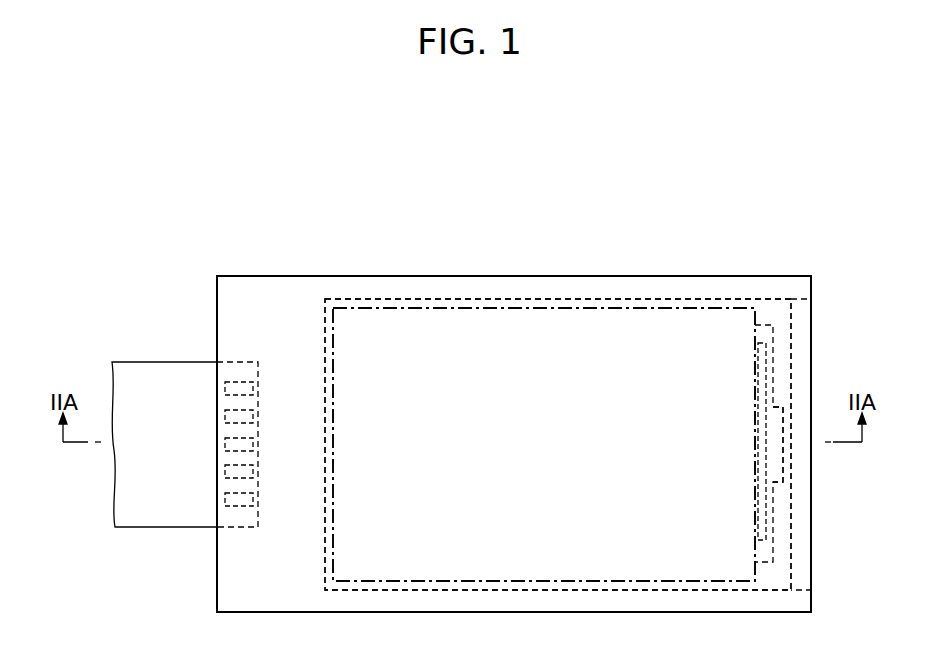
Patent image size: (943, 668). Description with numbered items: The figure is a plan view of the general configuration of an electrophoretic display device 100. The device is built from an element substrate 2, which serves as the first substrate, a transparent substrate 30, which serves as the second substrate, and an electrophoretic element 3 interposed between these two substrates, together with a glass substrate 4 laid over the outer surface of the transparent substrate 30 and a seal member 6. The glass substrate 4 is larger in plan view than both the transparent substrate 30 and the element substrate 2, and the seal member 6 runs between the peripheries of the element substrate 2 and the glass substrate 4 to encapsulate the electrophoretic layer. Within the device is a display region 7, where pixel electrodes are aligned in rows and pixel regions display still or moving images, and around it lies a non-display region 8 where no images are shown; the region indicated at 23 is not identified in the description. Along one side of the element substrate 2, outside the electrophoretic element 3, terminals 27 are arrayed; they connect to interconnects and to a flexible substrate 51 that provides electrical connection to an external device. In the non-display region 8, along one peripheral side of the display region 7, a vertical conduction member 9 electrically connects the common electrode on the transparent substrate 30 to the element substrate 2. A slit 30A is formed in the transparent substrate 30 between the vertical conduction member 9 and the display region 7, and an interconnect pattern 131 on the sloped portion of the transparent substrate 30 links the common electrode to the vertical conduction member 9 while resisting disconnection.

The electrophoretic display device 100 is at (648, 190).
The element substrate 2 is at (791, 299).
The electrophoretic element 3 is at (403, 308).
The glass substrate 4 is at (760, 286).
The seal member 6 is at (797, 323).
The display region 7 is at (544, 444).
The non-display region 8 is at (700, 290).
The vertical conduction member 9 is at (783, 463).
The pixel region 23 is at (537, 560).
The terminals 27 is at (237, 380).
The transparent substrate 30 is at (570, 300).
The slit 30A is at (762, 547).
The flexible substrate 51 is at (150, 528).
The interconnect pattern 131 is at (773, 510).